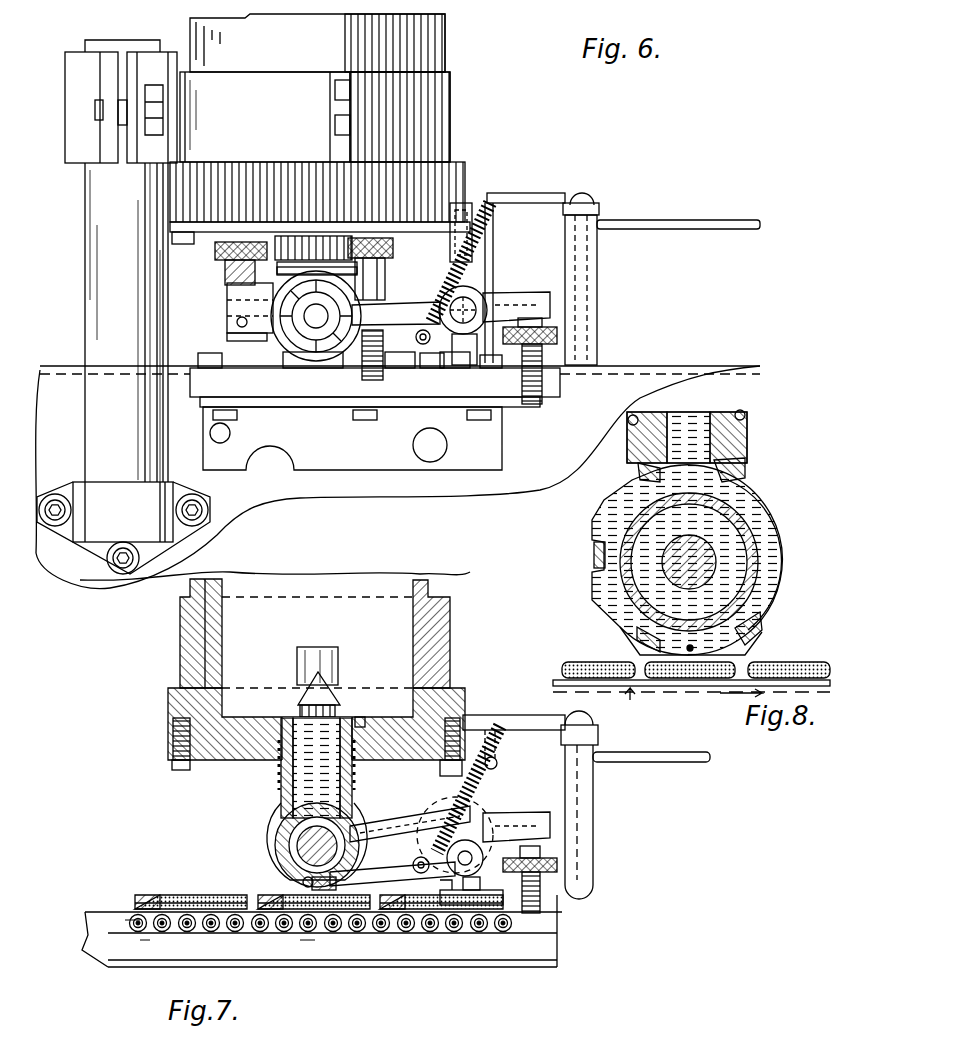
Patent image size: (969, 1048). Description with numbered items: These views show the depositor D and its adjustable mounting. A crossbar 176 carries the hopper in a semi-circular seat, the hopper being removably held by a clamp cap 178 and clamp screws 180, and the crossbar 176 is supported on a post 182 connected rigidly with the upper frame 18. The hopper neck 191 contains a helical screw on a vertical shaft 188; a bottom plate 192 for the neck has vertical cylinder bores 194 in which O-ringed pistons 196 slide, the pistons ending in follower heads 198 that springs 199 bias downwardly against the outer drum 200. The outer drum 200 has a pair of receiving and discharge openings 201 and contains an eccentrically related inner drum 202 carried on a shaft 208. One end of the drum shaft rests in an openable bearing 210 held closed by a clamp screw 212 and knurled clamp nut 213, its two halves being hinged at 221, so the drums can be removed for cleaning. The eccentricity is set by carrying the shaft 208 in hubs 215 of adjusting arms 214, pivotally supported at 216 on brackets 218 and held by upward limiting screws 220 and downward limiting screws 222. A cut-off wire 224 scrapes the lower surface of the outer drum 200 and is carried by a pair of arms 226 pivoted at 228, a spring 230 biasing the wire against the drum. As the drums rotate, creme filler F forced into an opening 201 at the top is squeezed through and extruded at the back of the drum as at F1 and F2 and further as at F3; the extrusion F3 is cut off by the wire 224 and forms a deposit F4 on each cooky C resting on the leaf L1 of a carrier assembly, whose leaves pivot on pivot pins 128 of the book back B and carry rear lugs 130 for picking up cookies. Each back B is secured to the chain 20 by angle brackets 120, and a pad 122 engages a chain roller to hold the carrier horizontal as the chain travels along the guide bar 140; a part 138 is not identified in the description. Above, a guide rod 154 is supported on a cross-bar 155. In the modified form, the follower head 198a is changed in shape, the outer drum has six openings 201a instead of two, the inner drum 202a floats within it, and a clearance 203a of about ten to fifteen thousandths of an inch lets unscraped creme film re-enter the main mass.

In FIG. 6, the upper frame 18 is at (545, 450).
In FIG. 7, the chain 20 is at (318, 935).
In FIG. 7, the angle brackets 120 is at (145, 935).
In FIG. 7, the pad 122 is at (213, 926).
In FIG. 7, the pivot pins 128 is at (450, 905).
In FIG. 7, the rear lugs 130 is at (138, 896).
In FIG. 7, the rail plate 138 is at (200, 935).
In FIG. 7, the guide bar 140 is at (560, 952).
In FIG. 6, the guide rod 154 is at (690, 220).
In FIG. 7, the guide rod 154 is at (650, 762).
In FIG. 6, the cross-bar 155 is at (598, 208).
In FIG. 7, the cross-bar 155 is at (598, 740).
In FIG. 6, the crossbar 176 is at (244, 112).
In FIG. 7, the crossbar 176 is at (185, 650).
In FIG. 6, the clamp cap 178 is at (448, 121).
In FIG. 7, the clamp cap 178 is at (452, 672).
In FIG. 6, the clamp screws 180 is at (345, 125).
In FIG. 6, the post 182 is at (100, 272).
In FIG. 7, the vertical shaft 188 is at (308, 655).
In FIG. 6, the neck 191 is at (318, 54).
In FIG. 7, the neck 191 is at (215, 637).
In FIG. 6, the bottom plate 192 is at (412, 222).
In FIG. 7, the bottom plate 192 is at (165, 760).
In FIG. 7, the vertical cylinder bores 194 is at (275, 722).
In FIG. 6, the O-ringed pistons 196 is at (300, 236).
In FIG. 7, the O-ringed pistons 196 is at (352, 724).
In FIG. 7, the follower heads 198 is at (358, 800).
In FIG. 8, the follower head 198a is at (735, 440).
In FIG. 6, the springs 199 is at (275, 262).
In FIG. 8, the springs 199 is at (746, 416).
In FIG. 7, the springs 199 is at (360, 780).
In FIG. 7, the outer drum 200 is at (282, 832).
In FIG. 7, the receiving and discharge openings 201 is at (285, 850).
In FIG. 8, the receiving and discharging openings 201a is at (770, 497).
In FIG. 7, the inner drum 202 is at (365, 836).
In FIG. 8, the inner drum 202a is at (735, 530).
In FIG. 8, the clearance 203a is at (745, 470).
In FIG. 6, the shaft 208 is at (312, 320).
In FIG. 8, the shaft 208 is at (594, 553).
In FIG. 7, the shaft 208 is at (315, 805).
In FIG. 6, the openable bearing 210 is at (268, 320).
In FIG. 6, the clamp screw 212 is at (230, 300).
In FIG. 6, the knurled clamp nut 213 is at (215, 258).
In FIG. 6, the adjusting arms 214 is at (420, 305).
In FIG. 7, the adjusting arms 214 is at (495, 815).
In FIG. 6, the hubs 215 is at (333, 355).
In FIG. 6, the pivot 216 is at (468, 303).
In FIG. 7, the pivot 216 is at (560, 835).
In FIG. 6, the brackets 218 is at (455, 340).
In FIG. 6, the upward limiting screws 220 is at (540, 360).
In FIG. 7, the upward limiting screws 220 is at (555, 880).
In FIG. 6, the hinge 221 is at (395, 370).
In FIG. 6, the downward limiting screws 222 is at (385, 264).
In FIG. 8, the cut-off wire 224 is at (712, 648).
In FIG. 7, the cut-off wire 224 is at (305, 884).
In FIG. 6, the arms 226 is at (362, 374).
In FIG. 7, the arms 226 is at (352, 864).
In FIG. 7, the pivot 228 is at (540, 895).
In FIG. 7, the spring 230 is at (478, 790).
In FIG. 6, the depositor D is at (431, 53).
In FIG. 7, the depositor D is at (456, 633).
In FIG. 8, the creme filler F is at (705, 412).
In FIG. 7, the creme filler F is at (280, 790).
In FIG. 8, the extrusion F1 is at (605, 515).
In FIG. 8, the extrusion F2 is at (600, 608).
In FIG. 8, the extrusion F3 is at (645, 645).
In FIG. 8, the deposit F4 is at (810, 650).
In FIG. 8, the cooky C is at (565, 664).
In FIG. 7, the cooky C is at (165, 895).
In FIG. 8, the book back B is at (630, 700).
In FIG. 7, the leaf L1 is at (290, 935).